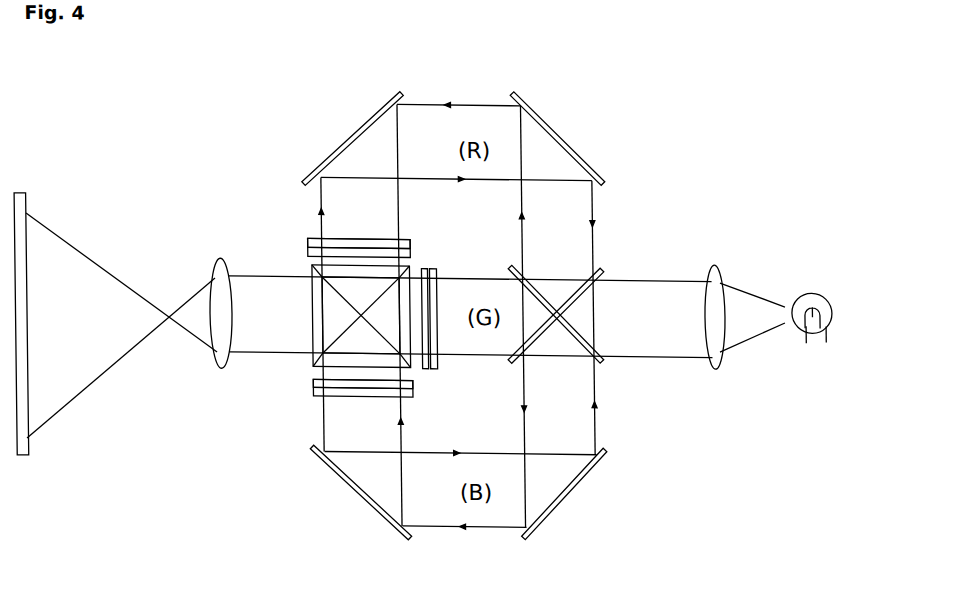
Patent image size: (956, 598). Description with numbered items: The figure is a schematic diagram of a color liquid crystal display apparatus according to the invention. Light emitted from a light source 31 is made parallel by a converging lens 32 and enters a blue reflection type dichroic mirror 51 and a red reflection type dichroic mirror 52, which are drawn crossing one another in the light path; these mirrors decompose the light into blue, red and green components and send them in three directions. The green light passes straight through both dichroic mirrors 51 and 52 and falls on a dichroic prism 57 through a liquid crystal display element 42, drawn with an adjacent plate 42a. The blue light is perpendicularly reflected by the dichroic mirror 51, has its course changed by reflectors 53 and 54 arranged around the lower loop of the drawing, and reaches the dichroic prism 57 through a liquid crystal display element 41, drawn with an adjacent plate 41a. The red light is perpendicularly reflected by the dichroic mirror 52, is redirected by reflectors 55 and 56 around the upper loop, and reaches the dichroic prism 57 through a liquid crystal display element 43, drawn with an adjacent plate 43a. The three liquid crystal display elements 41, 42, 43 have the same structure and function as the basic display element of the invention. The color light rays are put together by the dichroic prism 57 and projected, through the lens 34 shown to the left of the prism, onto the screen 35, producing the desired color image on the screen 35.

The light source 31 is at (808, 289).
The converging lens 32 is at (727, 277).
The projection lens 34 is at (221, 261).
The screen 35 is at (24, 202).
The liquid crystal display element 41 is at (411, 398).
The polarizing plate of blue light valve 41a is at (311, 388).
The liquid crystal display element 42 is at (434, 266).
The polarizing plate of green light valve 42a is at (431, 372).
The liquid crystal display element 43 is at (361, 239).
The polarizing plate of red light valve 43a is at (411, 248).
The blue reflection type dichroic mirror 51 is at (604, 265).
The red reflection type dichroic mirror 52 is at (601, 360).
The reflector 53 is at (575, 484).
The reflector 54 is at (381, 519).
The reflector 55 is at (560, 135).
The reflector 56 is at (354, 139).
The dichroic prism 57 is at (335, 328).